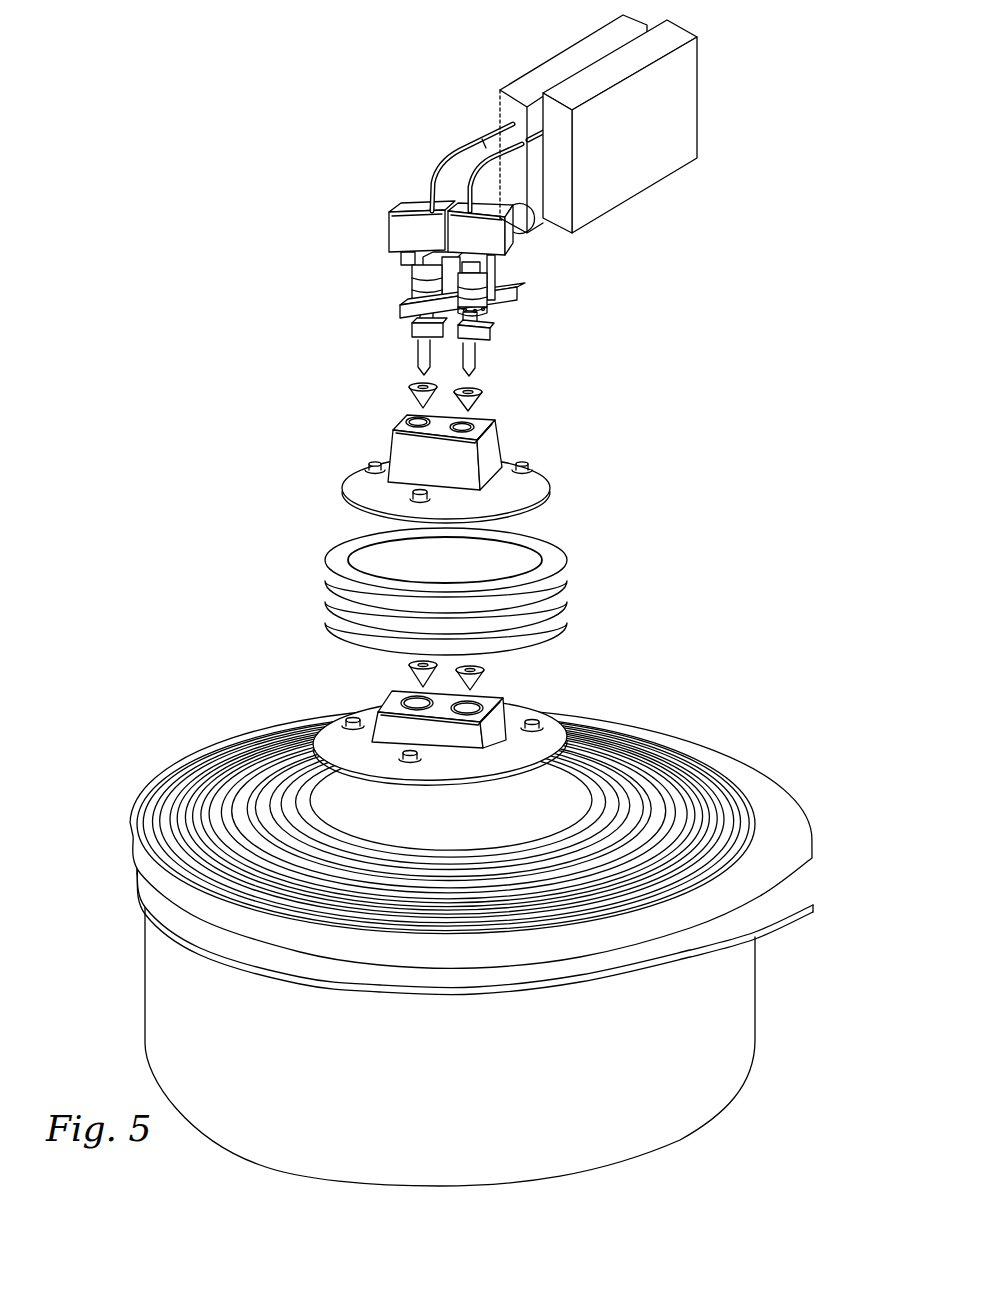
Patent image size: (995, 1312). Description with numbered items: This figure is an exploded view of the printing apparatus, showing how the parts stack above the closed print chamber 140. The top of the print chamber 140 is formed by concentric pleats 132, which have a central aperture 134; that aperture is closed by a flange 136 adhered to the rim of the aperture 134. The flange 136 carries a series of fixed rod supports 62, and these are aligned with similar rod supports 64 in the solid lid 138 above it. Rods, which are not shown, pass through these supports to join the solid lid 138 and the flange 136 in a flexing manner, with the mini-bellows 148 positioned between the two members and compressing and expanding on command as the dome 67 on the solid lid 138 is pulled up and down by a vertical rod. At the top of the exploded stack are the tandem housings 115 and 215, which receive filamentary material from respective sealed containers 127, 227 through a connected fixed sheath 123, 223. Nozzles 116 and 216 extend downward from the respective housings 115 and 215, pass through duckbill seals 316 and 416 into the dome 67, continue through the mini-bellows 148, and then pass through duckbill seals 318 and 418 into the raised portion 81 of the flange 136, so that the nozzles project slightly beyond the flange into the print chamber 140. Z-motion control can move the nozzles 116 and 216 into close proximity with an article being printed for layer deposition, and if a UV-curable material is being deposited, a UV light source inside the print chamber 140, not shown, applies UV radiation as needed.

The closed print chamber 140 is at (778, 973).
The concentric pleats 132 is at (650, 767).
The central aperture 134 is at (567, 777).
The flange 136 is at (520, 713).
The raised portion 81 is at (493, 703).
The fixed rod supports 62 is at (350, 720).
The duckbill seal 418 is at (410, 680).
The duckbill seal 318 is at (482, 680).
The mini-bellows 148 is at (558, 583).
The solid lid 138 is at (533, 488).
The dome 67 is at (500, 453).
The rod supports 64 is at (364, 466).
The duckbill seal 416 is at (413, 393).
The duckbill seal 316 is at (482, 402).
The nozzle 216 is at (417, 345).
The nozzle 116 is at (473, 370).
The housing 215 is at (400, 230).
The housing 115 is at (518, 237).
The fixed sheath 223 is at (458, 147).
The fixed sheath 123 is at (512, 152).
The sealed container 227 is at (543, 70).
The sealed container 127 is at (687, 90).